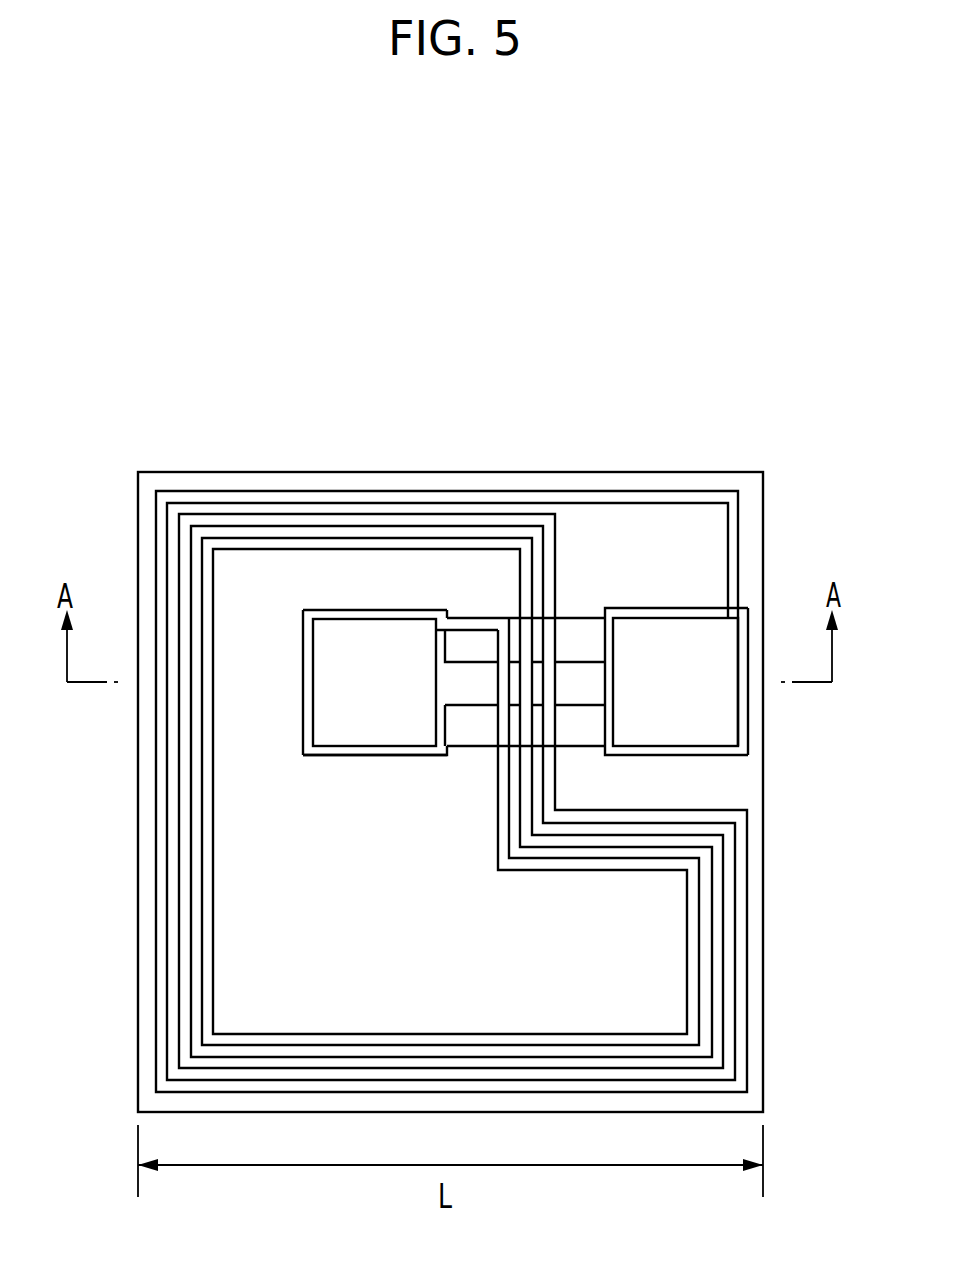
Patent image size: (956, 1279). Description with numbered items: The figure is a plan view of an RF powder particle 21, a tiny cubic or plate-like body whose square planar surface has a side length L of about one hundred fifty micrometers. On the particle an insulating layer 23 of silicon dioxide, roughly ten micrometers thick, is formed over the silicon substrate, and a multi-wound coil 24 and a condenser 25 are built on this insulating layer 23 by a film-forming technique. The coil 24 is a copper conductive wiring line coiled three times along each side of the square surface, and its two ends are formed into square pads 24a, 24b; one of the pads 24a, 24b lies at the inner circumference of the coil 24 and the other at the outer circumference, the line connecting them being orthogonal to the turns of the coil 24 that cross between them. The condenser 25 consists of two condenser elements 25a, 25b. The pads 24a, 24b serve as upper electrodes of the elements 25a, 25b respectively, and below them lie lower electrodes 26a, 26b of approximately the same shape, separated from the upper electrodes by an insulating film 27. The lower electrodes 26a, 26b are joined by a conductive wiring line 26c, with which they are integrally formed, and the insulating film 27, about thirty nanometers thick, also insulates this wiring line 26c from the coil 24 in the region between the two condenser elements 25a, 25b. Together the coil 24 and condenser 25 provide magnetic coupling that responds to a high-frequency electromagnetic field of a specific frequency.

The RF powder particle 21 is at (533, 438).
The insulating layer 23 is at (655, 486).
The coil 24 is at (371, 483).
The pad 24a is at (343, 690).
The pad 24b is at (667, 612).
The condenser 25 is at (422, 777).
The condenser element 25a is at (346, 596).
The condenser element 25b is at (756, 697).
The lower electrode 26a is at (298, 608).
The lower electrode 26b is at (749, 623).
The conductive wiring line 26c is at (469, 660).
The insulating film 27 is at (586, 617).